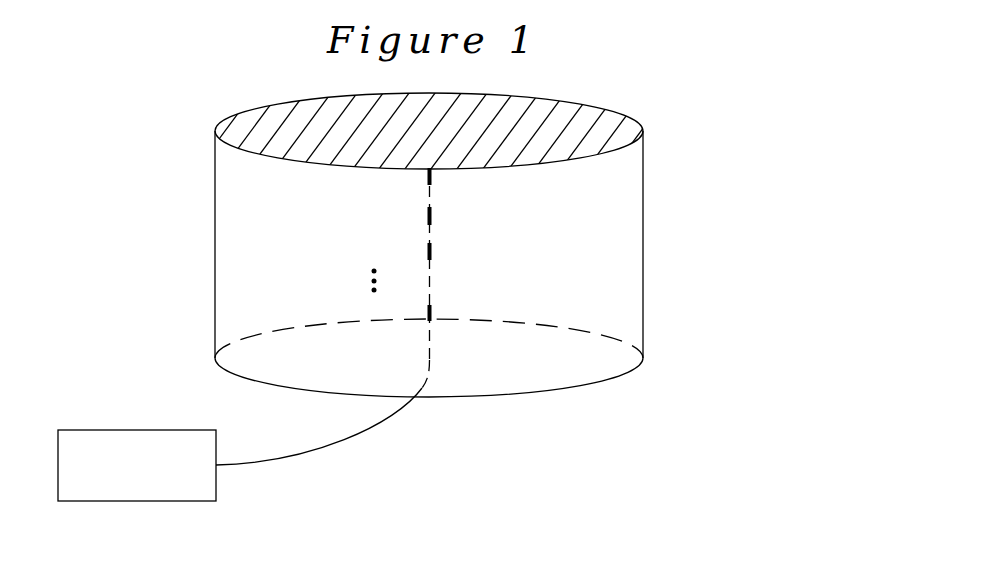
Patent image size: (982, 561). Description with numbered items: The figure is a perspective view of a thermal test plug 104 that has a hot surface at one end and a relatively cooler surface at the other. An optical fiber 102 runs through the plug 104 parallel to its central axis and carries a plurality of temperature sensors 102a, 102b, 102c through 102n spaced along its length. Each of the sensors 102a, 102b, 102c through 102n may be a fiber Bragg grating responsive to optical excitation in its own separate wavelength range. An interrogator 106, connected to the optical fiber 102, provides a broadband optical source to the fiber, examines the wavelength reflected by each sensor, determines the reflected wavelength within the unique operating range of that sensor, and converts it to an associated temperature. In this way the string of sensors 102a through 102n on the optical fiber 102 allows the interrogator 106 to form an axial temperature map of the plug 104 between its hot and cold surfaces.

The optical fiber 102 is at (356, 316).
The temperature sensor 102a is at (428, 172).
The temperature sensor 102b is at (428, 209).
The temperature sensor 102c is at (428, 245).
The temperature sensor 102n is at (428, 314).
The thermal test plug 104 is at (427, 234).
The interrogator 106 is at (134, 448).